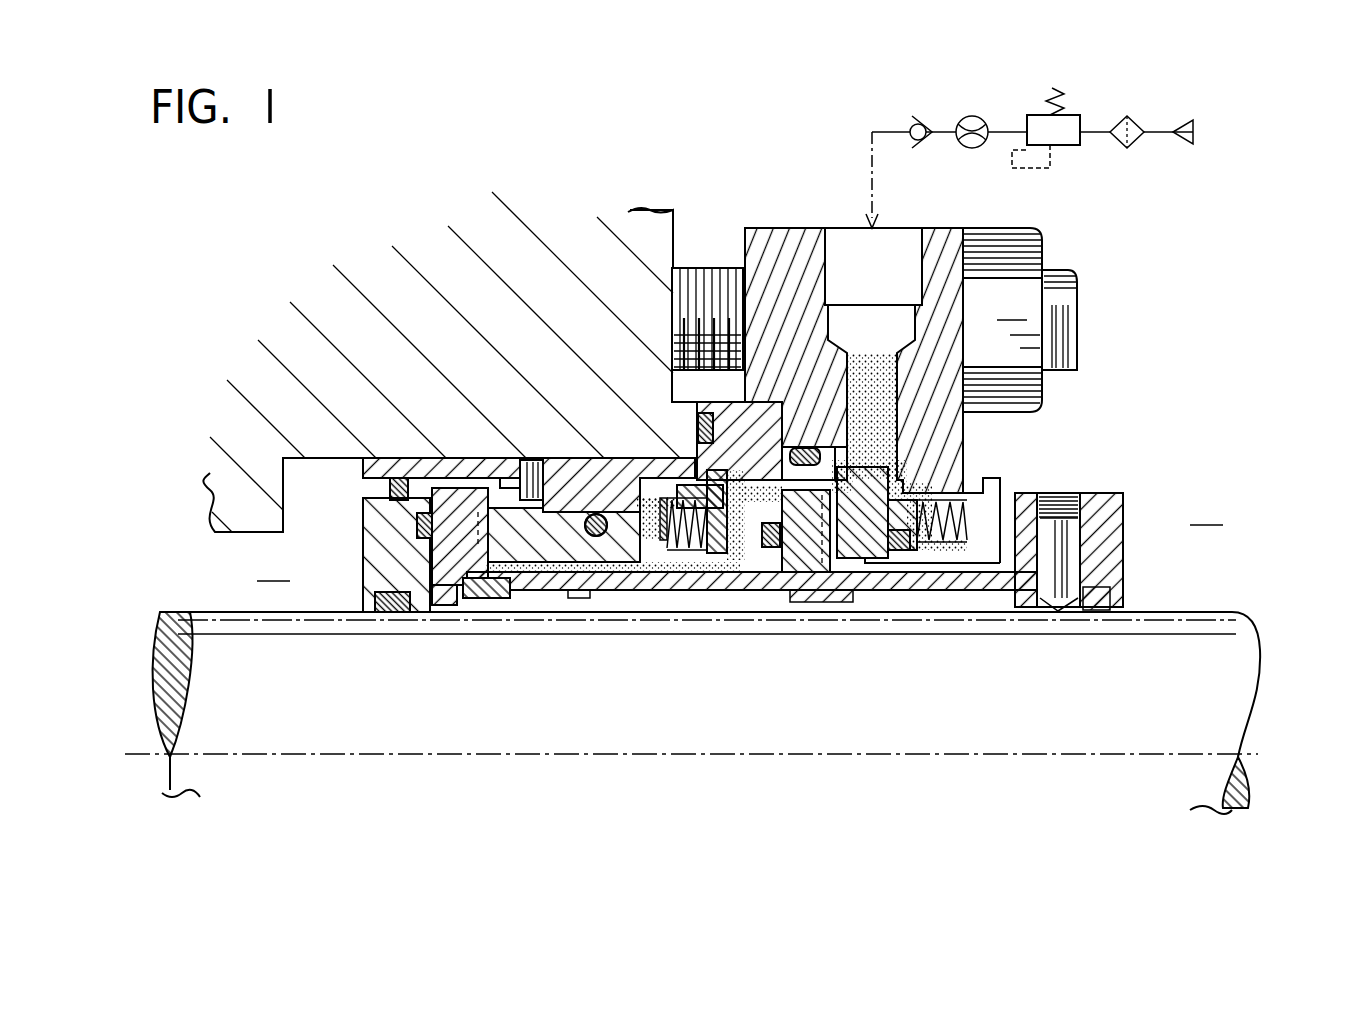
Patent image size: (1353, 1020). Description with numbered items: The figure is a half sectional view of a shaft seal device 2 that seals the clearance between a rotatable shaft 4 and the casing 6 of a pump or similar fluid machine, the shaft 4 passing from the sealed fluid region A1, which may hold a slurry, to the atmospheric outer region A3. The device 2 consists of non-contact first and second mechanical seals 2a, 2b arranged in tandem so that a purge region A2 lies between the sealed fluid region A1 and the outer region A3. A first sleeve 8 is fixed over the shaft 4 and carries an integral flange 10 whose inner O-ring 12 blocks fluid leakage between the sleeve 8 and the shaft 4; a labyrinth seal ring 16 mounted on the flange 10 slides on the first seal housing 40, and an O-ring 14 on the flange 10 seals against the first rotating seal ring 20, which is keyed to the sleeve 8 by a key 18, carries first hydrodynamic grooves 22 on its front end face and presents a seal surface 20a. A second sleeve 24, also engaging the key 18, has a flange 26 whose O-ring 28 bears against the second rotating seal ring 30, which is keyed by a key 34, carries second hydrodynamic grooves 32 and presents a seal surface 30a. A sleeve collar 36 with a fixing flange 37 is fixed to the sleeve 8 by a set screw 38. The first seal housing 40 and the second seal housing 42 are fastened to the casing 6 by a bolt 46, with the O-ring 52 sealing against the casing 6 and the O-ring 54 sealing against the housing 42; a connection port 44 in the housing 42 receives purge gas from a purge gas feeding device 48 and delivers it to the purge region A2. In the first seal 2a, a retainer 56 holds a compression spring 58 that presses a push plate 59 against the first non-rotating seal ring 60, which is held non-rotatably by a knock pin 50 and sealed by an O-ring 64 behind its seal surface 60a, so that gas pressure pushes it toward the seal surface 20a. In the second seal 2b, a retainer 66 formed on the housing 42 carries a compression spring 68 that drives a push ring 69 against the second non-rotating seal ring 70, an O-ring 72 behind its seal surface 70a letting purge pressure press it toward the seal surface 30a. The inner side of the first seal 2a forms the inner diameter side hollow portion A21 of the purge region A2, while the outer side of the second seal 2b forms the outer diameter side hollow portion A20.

The shaft seal device 2 is at (1106, 453).
The first mechanical seal 2a is at (492, 598).
The second mechanical seal 2b is at (875, 598).
The rotatable shaft 4 is at (1240, 697).
The casing 6 is at (652, 242).
The first sleeve 8 is at (692, 605).
The flange 10 is at (330, 595).
The O-ring 12 is at (392, 600).
The O-ring 14 is at (442, 462).
The labyrinth seal ring 16 is at (367, 480).
The key 18 is at (478, 600).
The first rotating seal ring 20 is at (459, 462).
The seal surface 20a is at (498, 462).
The first hydrodynamic grooves 22 is at (452, 612).
The second sleeve 24 is at (613, 600).
The flange 26 is at (753, 600).
The O-ring 28 is at (773, 600).
The second rotating seal ring 30 is at (817, 600).
The seal surface 30a is at (905, 490).
The second hydrodynamic grooves 32 is at (795, 615).
The key 34 is at (867, 600).
The sleeve collar 36 is at (967, 600).
The fixing flange 37 is at (1107, 551).
The set screw 38 is at (1048, 600).
The first seal housing 40 is at (567, 462).
The second seal housing 42 is at (943, 333).
The connection port 44 is at (873, 257).
The bolt 46 is at (706, 298).
The purge gas feeding device 48 is at (1106, 158).
The knock pin 50 is at (530, 462).
The O-ring 52 is at (697, 440).
The O-ring 54 is at (802, 447).
The retainer 56 is at (715, 600).
The compression spring 58 is at (667, 600).
The push plate 59 is at (632, 600).
The first non-rotating seal ring 60 is at (568, 600).
The first non-rotating seal surface 60a is at (438, 598).
The O-ring 64 is at (600, 600).
The retainer 66 is at (930, 600).
The compression spring 68 is at (950, 600).
The push ring 69 is at (917, 480).
The second non-rotating seal ring 70 is at (1010, 378).
The second non-rotating seal surface 70a is at (872, 600).
The O-ring 72 is at (900, 600).
The sealed fluid region A1 is at (273, 569).
The purge region A2 is at (725, 600).
The outer diameter side hollow portion A20 is at (818, 470).
The inner diameter side hollow portion A21 is at (523, 551).
The outer region A3 is at (1206, 513).